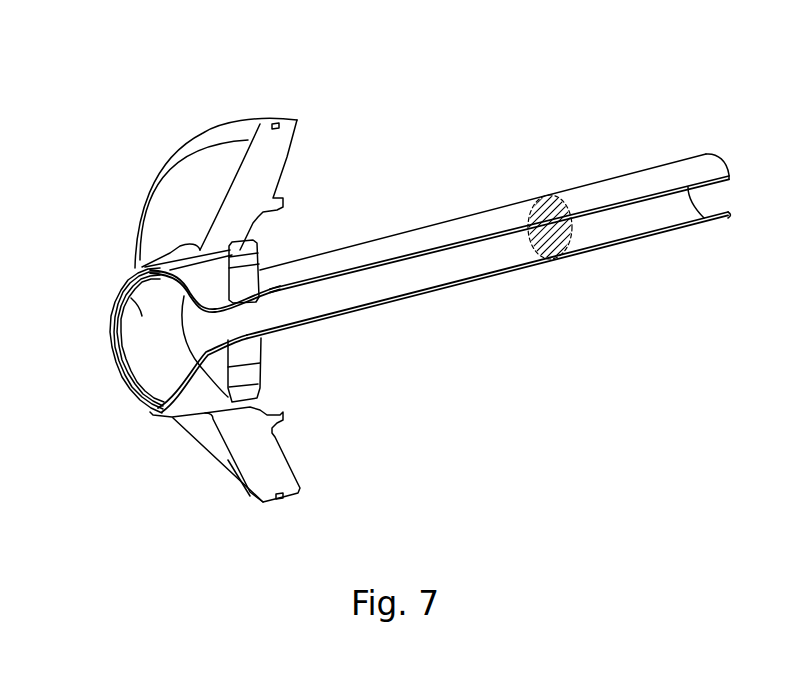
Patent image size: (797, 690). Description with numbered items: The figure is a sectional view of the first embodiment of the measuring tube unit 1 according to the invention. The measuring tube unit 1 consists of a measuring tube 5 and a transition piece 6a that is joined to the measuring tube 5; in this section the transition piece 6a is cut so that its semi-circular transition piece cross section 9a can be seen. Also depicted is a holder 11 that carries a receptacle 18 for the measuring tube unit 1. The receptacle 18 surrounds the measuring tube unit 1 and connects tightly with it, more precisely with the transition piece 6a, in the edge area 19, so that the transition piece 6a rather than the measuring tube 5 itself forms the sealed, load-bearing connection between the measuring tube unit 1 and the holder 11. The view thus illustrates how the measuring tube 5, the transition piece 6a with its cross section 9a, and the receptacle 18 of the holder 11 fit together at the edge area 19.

The measuring tube unit 1 is at (442, 126).
The measuring tube 5 is at (596, 198).
The transition piece 6a is at (135, 347).
The transition piece cross section 9a is at (120, 300).
The holder 11 is at (230, 139).
The receptacle 18 is at (187, 263).
The edge area 19 is at (140, 403).